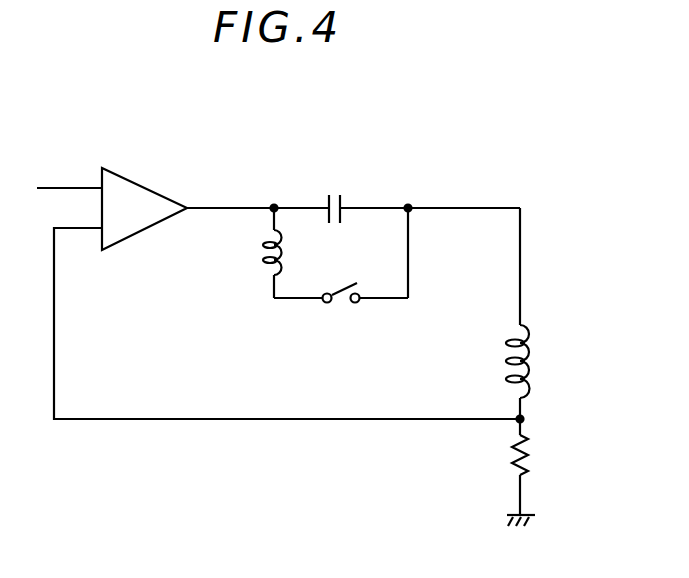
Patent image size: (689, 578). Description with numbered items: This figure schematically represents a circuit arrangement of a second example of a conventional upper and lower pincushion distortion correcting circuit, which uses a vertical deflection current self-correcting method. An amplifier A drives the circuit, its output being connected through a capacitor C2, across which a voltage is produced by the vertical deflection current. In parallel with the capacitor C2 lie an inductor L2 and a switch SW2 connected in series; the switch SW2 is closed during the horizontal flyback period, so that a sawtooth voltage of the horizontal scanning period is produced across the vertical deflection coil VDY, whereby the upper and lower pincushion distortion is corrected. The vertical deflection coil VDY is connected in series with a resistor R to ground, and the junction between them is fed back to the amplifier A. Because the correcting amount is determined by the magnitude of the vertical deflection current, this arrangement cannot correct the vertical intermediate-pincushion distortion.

The amplifier A is at (144, 200).
The capacitor C2 is at (333, 193).
The inductor coil L2 is at (255, 253).
The switch SW2 is at (341, 274).
The vertical deflection coil VDY is at (548, 361).
The resistor R is at (532, 455).